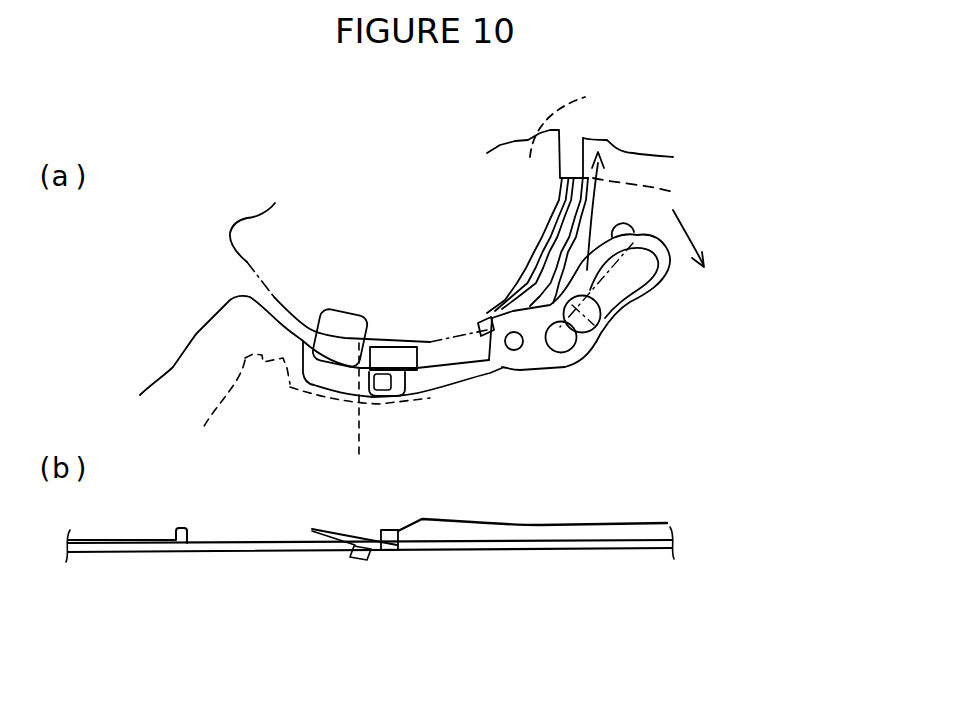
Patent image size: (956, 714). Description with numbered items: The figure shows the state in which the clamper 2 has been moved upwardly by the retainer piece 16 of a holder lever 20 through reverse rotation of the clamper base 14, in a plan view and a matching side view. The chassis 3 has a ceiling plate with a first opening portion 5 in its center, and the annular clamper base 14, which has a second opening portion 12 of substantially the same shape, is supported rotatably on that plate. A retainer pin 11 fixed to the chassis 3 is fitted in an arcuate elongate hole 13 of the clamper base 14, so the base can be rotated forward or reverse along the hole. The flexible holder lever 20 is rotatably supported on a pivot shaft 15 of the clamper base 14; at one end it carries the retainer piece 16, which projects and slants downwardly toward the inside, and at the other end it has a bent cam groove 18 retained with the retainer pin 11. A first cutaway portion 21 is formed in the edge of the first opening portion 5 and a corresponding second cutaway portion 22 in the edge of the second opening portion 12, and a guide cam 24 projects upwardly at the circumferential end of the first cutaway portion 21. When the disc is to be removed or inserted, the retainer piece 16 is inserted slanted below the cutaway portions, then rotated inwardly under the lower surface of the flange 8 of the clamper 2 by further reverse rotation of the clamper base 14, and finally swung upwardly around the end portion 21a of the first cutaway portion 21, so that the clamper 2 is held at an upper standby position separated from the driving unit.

In FIG. 10A, the clamper 2 is at (567, 119).
In FIG. 10B, the chassis 3 is at (132, 553).
In FIG. 10A, the first opening portion 5 is at (543, 255).
In FIG. 10A, the flange 8 is at (247, 262).
In FIG. 10A, the retainer pin 11 is at (594, 325).
In FIG. 10A, the second opening portion 12 is at (532, 298).
In FIG. 10A, the arcuate elongate hole 13 is at (617, 255).
In FIG. 10A, the clamper base 14 is at (648, 163).
In FIG. 10A, the pivot shaft 15 is at (514, 350).
In FIG. 10A, the retainer piece 16 is at (345, 371).
In FIG. 10B, the retainer piece 16 is at (320, 532).
In FIG. 10A, the cam groove 18 is at (611, 295).
In FIG. 10A, the holder lever 20 is at (550, 383).
In FIG. 10B, the holder lever 20 is at (563, 467).
In FIG. 10A, the first cutaway portion 21 is at (262, 365).
In FIG. 10B, the first cutaway portion 21 is at (199, 552).
In FIG. 10A, the end portion 21a is at (367, 413).
In FIG. 10B, the end portion 21a is at (353, 556).
In FIG. 10A, the second cutaway portion 22 is at (429, 385).
In FIG. 10A, the guide cam 24 is at (385, 397).
In FIG. 10B, the guide cam 24 is at (393, 547).